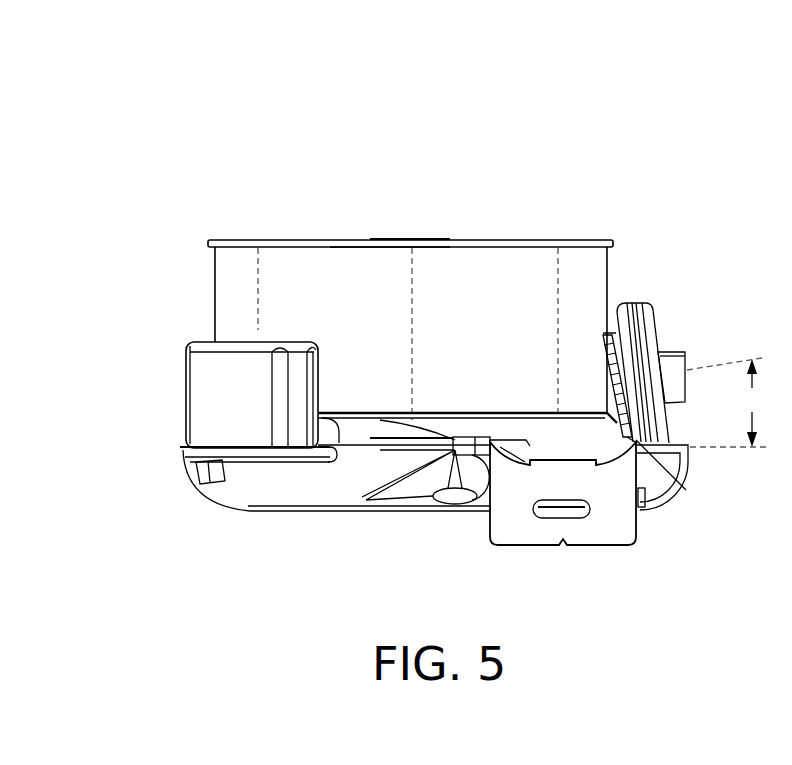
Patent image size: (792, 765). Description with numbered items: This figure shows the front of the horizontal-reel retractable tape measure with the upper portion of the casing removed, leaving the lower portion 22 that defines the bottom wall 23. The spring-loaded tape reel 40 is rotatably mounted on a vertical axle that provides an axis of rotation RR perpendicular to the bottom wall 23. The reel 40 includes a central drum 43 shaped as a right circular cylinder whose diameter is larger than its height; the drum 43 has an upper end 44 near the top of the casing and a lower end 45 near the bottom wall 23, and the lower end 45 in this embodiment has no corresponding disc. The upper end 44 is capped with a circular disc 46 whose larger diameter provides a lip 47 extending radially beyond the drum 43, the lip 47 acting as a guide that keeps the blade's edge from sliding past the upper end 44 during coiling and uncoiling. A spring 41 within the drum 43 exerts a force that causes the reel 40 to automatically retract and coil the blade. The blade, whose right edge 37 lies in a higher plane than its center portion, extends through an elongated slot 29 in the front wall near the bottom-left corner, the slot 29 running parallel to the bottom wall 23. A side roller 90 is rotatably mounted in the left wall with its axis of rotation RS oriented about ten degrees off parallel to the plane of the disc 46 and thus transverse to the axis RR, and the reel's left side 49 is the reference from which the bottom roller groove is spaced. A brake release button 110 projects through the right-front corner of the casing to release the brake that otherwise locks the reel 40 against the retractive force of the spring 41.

The tape reel 40 is at (632, 202).
The spring 41 is at (489, 228).
The central drum 43 is at (557, 318).
The upper end 44 is at (366, 249).
The lower end 45 is at (511, 411).
The circular disc 46 is at (314, 241).
The lip 47 is at (226, 243).
The left side of the reel 49 is at (608, 295).
The side roller 90 is at (672, 386).
The axis of rotation of the tape reel RR is at (408, 219).
The axis of rotation of the side roller RS is at (723, 369).
The lower portion 22 is at (146, 479).
The bottom wall 23 is at (389, 533).
The elongated slot 29 is at (619, 521).
The right edge 37 is at (686, 472).
The brake release button 110 is at (203, 391).